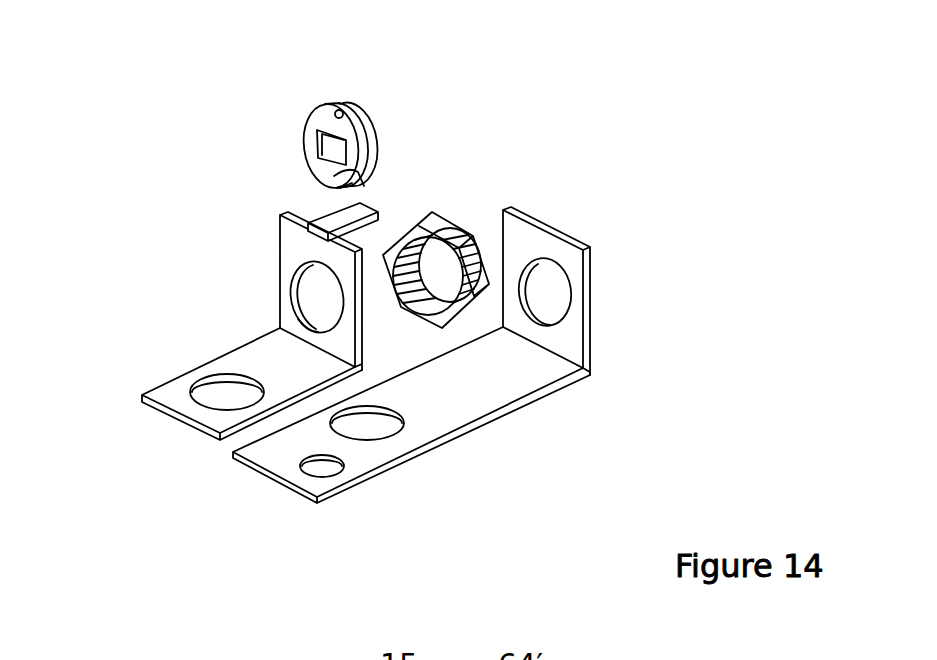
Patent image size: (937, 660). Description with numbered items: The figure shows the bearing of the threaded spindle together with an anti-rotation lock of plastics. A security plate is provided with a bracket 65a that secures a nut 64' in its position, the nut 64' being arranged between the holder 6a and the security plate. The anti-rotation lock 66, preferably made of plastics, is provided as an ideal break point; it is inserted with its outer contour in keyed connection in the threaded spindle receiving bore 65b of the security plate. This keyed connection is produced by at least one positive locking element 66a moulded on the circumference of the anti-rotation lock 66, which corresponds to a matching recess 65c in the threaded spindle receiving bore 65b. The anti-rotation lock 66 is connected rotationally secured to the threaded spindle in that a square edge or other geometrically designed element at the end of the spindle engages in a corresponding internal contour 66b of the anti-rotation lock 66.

The internal contour 66b is at (330, 152).
The positive locking element 66a is at (380, 140).
The anti-rotation lock 66 is at (381, 157).
The bracket 65a is at (352, 213).
The nut 64' is at (542, 211).
The recess 65c is at (305, 320).
The threaded spindle receiving bore 65b is at (325, 303).
The holder 6a is at (475, 388).